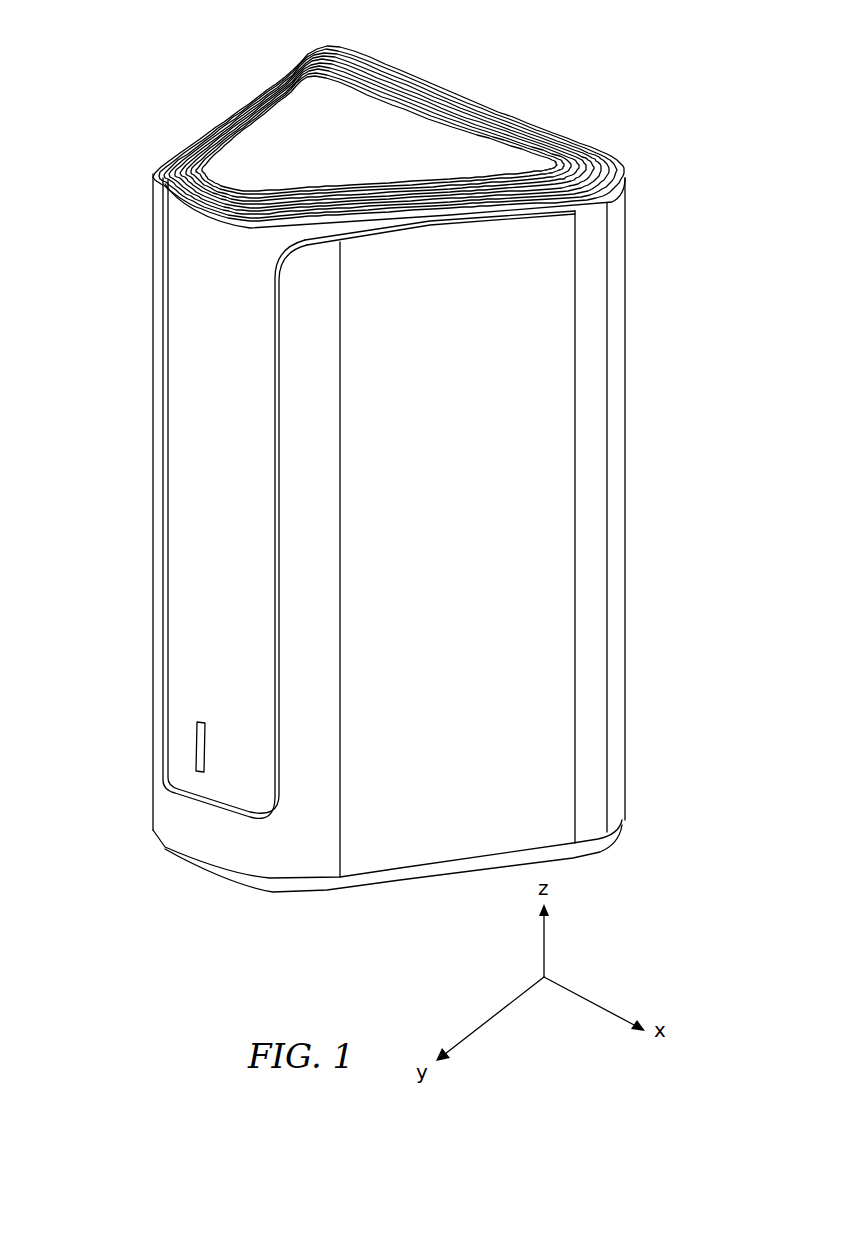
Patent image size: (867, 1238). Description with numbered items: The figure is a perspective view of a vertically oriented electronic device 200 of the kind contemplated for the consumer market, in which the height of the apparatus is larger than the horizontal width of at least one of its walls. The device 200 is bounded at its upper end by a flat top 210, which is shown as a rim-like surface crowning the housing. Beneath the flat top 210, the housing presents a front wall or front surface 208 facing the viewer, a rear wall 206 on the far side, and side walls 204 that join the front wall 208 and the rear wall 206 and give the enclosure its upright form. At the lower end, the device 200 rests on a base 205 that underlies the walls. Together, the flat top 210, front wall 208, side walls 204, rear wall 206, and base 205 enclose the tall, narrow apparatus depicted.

The vertically oriented electronic device 200 is at (648, 49).
The side walls 204 is at (517, 355).
The base 205 is at (425, 877).
The rear wall 206 is at (630, 562).
The front wall 208 is at (193, 385).
The flat top 210 is at (233, 177).